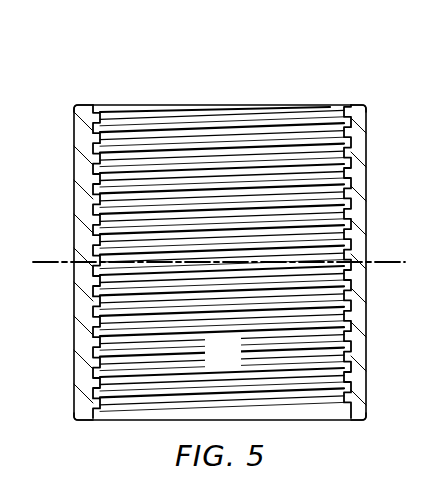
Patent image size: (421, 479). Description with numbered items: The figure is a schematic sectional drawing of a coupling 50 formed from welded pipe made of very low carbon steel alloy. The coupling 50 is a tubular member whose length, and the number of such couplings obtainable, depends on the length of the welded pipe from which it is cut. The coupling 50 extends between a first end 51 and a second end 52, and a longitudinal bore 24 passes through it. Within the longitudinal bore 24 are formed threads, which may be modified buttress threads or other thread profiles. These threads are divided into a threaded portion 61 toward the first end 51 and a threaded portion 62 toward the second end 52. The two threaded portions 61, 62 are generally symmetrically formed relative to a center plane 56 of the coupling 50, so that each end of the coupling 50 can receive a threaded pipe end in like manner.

The coupling 50 is at (190, 73).
The first end 51 is at (355, 104).
The second end 52 is at (356, 421).
The center plane 56 is at (46, 260).
The threaded portion 61 is at (105, 118).
The threaded portion 62 is at (104, 404).
The longitudinal bore 24 is at (235, 365).